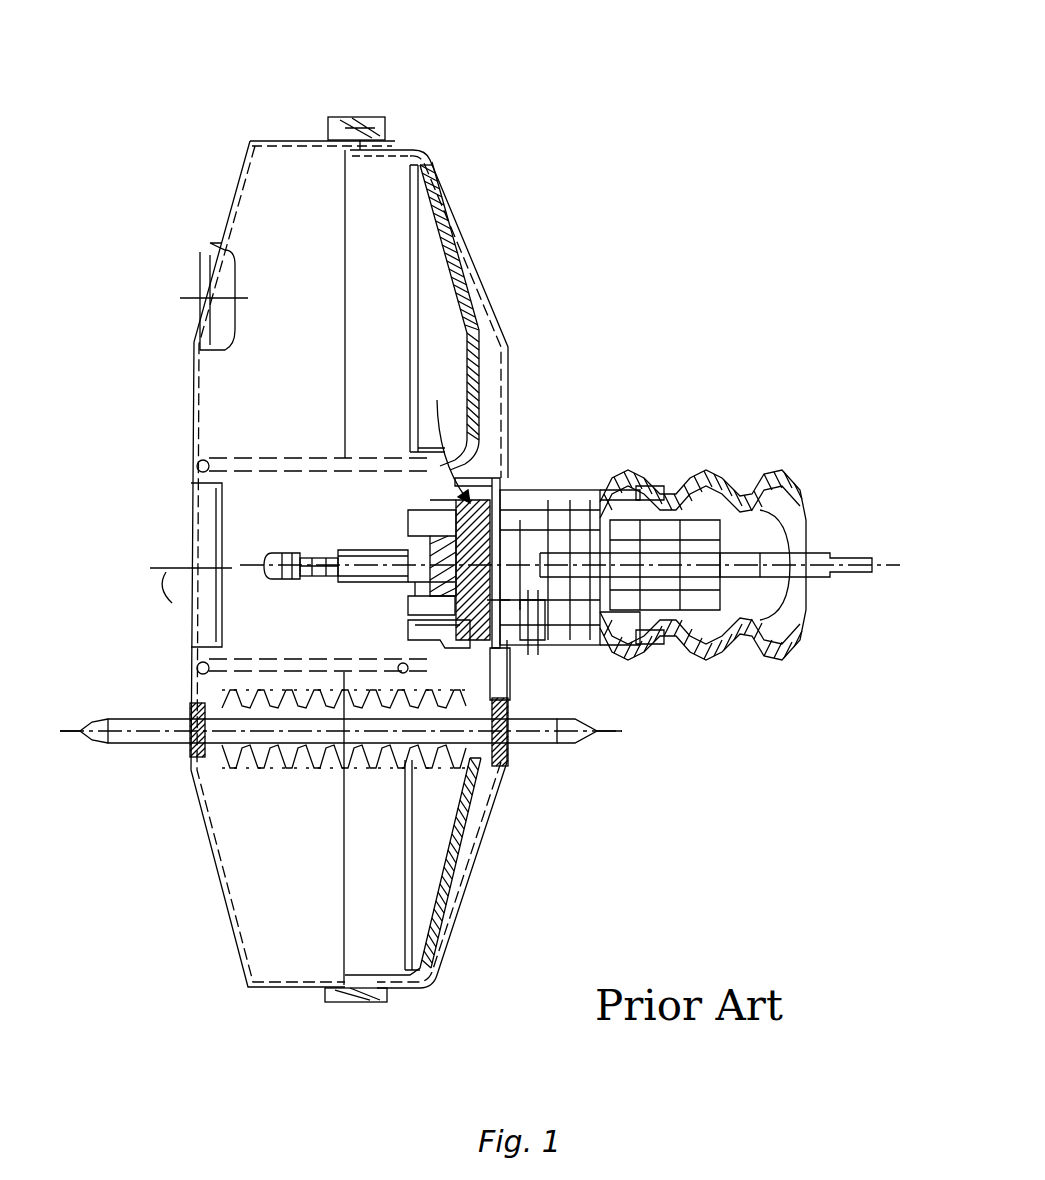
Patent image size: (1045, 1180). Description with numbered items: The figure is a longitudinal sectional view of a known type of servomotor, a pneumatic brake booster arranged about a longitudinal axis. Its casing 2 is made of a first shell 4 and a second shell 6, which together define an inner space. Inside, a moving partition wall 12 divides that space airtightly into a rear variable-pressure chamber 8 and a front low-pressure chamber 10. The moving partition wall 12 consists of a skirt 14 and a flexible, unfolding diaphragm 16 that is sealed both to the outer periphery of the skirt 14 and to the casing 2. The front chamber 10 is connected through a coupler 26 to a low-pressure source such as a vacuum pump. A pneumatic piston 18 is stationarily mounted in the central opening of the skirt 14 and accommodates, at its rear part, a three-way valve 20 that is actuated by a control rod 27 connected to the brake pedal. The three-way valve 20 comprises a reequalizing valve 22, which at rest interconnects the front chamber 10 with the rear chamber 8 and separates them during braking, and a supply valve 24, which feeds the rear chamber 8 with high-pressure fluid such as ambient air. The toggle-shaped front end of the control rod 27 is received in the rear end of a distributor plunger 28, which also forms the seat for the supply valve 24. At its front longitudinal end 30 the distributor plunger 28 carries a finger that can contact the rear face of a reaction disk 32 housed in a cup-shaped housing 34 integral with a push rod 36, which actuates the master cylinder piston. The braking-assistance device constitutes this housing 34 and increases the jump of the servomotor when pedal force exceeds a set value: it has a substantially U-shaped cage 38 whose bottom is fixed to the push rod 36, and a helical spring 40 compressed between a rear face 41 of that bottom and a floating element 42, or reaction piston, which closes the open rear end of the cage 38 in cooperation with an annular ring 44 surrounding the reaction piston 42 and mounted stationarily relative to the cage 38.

The casing 2 is at (393, 106).
The first shell 4 is at (248, 143).
The second shell 6 is at (432, 252).
The rear variable-pressure chamber 8 is at (482, 318).
The front low-pressure chamber 10 is at (302, 567).
The moving partition wall 12 is at (450, 222).
The skirt 14 is at (452, 882).
The diaphragm 16 is at (398, 152).
The pneumatic piston 18 is at (499, 655).
The three-way valve 20 is at (652, 490).
The reequalizing valve 22 is at (612, 628).
The supply valve 24 is at (652, 648).
The coupler 26 is at (210, 258).
The control rod 27 is at (794, 558).
The distributor plunger 28 is at (533, 600).
The front longitudinal end 30 is at (545, 540).
The reaction disk 32 is at (465, 633).
The cup-shaped housing 34 is at (490, 540).
The push rod 36 is at (360, 556).
The U-shaped cage 38 is at (412, 611).
The helical spring 40 is at (412, 596).
The rear face 41 is at (342, 580).
The floating element 42 is at (438, 536).
The annular ring 44 is at (455, 497).